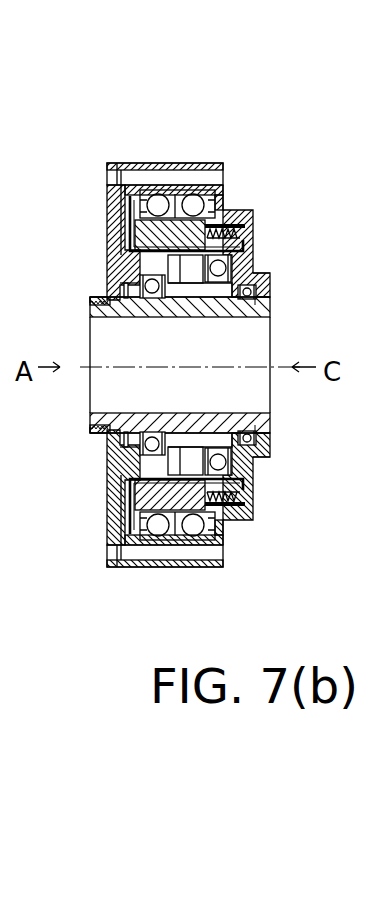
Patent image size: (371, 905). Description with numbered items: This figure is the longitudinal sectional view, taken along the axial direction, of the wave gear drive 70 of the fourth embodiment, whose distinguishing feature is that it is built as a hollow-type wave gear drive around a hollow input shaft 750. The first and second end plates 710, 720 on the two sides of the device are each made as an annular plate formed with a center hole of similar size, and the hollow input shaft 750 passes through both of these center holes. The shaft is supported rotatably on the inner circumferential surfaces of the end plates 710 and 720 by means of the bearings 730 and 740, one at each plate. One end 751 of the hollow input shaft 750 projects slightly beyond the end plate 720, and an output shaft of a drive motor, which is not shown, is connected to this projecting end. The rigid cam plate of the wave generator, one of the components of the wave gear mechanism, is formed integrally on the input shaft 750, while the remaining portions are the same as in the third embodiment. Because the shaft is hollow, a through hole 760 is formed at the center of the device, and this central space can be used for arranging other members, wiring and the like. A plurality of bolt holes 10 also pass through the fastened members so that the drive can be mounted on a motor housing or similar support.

The bolt holes 10 is at (170, 168).
The wave gear drive 70 is at (283, 157).
The first end plate 710 is at (254, 254).
The second end plate 720 is at (112, 222).
The bearing 730 is at (256, 305).
The bearing 740 is at (145, 303).
The hollow input shaft 750 is at (180, 331).
The one end of the hollow input shaft 751 is at (126, 298).
The through hole 760 is at (202, 405).